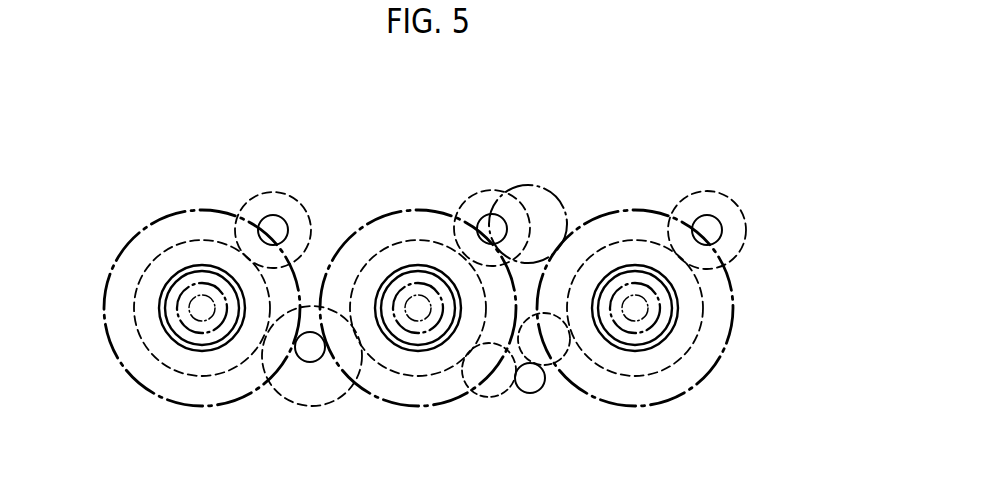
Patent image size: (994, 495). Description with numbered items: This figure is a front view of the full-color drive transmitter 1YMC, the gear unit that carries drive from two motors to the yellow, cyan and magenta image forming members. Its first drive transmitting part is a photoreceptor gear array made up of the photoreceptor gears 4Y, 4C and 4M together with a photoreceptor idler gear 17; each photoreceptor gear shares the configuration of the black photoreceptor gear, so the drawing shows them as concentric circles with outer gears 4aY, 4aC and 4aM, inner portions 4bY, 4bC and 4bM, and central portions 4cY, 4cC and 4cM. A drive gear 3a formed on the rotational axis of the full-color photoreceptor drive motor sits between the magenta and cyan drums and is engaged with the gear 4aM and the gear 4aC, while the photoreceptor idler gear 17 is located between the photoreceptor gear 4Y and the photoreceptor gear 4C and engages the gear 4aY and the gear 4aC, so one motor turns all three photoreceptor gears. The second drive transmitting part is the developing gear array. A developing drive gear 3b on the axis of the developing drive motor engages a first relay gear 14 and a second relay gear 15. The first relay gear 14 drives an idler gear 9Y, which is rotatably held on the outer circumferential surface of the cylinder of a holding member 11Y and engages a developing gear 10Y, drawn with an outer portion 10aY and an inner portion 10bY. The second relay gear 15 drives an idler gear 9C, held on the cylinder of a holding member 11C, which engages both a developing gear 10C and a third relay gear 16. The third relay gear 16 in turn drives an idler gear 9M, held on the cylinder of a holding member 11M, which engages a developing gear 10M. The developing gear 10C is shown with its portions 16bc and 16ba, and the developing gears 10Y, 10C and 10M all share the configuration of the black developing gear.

The full-color drive transmitter 1YMC is at (647, 128).
The photoreceptor gear 4M is at (175, 296).
The gear 4aM is at (197, 208).
The drum flange (magenta) 4bM is at (178, 311).
The drum shaft (magenta) 4cM is at (197, 320).
The holding member 11M is at (167, 287).
The idler gear 9M is at (205, 378).
The developing gear 10M is at (280, 180).
The third relay gear 16 is at (323, 407).
The drive gear 3a is at (304, 362).
The photoreceptor gear 4C is at (418, 291).
The gear 4aC is at (402, 209).
The drum flange (cyan) 4bC is at (402, 288).
The drum shaft (cyan) 4cC is at (410, 318).
The holding member 11C is at (383, 283).
The idler gear 9C is at (425, 377).
The developing gear 10C is at (474, 190).
The gear 16bc is at (473, 192).
The gear shaft 16ba is at (490, 214).
The photoreceptor idler gear 17 is at (550, 190).
The second relay gear 15 is at (492, 398).
The developing drive gear 3b is at (531, 394).
The first relay gear 14 is at (562, 383).
The photoreceptor gear 4Y is at (673, 327).
The gear 4aY is at (735, 313).
The drum flange (yellow) 4bY is at (658, 318).
The drum shaft (yellow) 4cY is at (628, 320).
The holding member 11Y is at (667, 293).
The idler gear 9Y is at (667, 373).
The developing gear 10Y is at (736, 206).
The cleaning roller body (yellow) 10aY is at (741, 205).
The cleaning roller shaft (yellow) 10bY is at (723, 229).